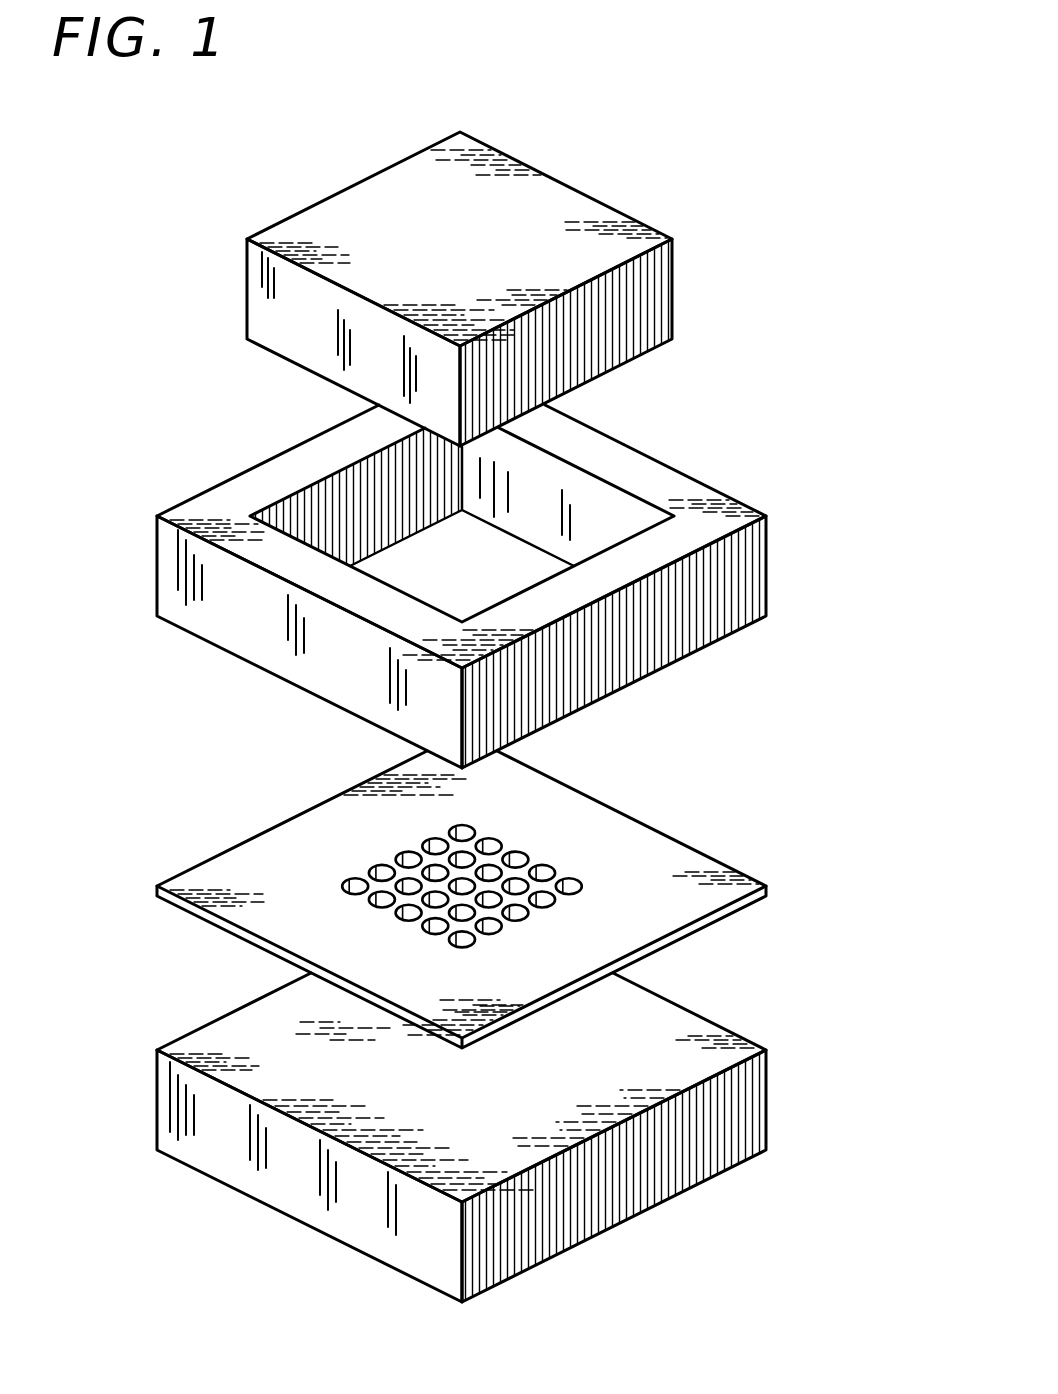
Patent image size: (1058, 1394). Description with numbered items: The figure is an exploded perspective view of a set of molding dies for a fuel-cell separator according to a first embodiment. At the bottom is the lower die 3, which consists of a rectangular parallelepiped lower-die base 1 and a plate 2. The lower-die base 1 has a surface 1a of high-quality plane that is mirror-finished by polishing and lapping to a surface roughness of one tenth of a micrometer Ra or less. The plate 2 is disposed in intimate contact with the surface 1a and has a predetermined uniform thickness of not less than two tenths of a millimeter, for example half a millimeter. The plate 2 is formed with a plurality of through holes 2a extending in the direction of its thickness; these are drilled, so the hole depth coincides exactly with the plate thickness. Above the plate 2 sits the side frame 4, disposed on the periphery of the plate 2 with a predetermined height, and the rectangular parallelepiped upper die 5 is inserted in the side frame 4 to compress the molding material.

The lower-die base 1 is at (456, 1114).
The surface 1a is at (200, 1048).
The plate 2 is at (488, 888).
The through holes 2a is at (570, 880).
The lower die 3 is at (835, 772).
The side frame 4 is at (769, 542).
The upper die 5 is at (676, 284).